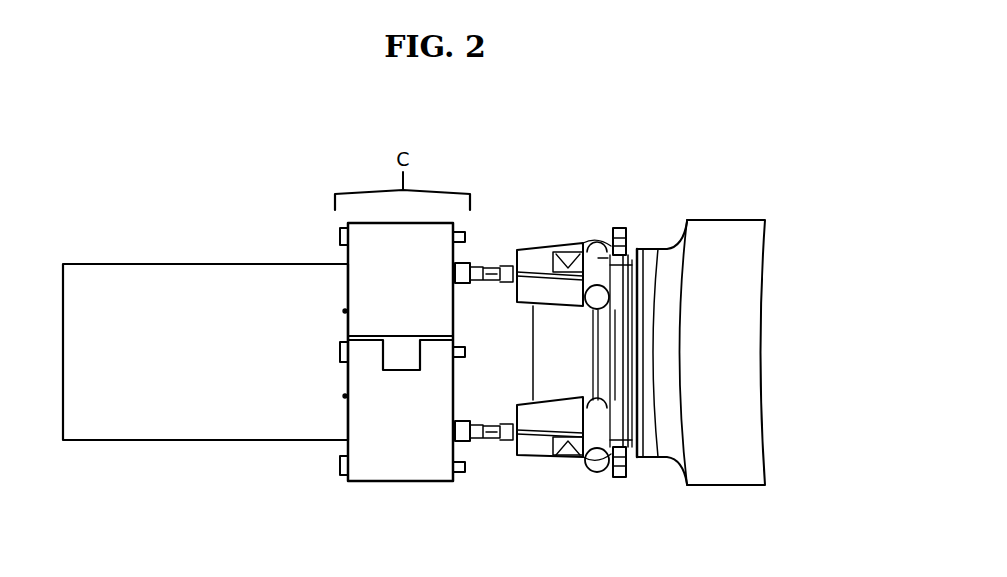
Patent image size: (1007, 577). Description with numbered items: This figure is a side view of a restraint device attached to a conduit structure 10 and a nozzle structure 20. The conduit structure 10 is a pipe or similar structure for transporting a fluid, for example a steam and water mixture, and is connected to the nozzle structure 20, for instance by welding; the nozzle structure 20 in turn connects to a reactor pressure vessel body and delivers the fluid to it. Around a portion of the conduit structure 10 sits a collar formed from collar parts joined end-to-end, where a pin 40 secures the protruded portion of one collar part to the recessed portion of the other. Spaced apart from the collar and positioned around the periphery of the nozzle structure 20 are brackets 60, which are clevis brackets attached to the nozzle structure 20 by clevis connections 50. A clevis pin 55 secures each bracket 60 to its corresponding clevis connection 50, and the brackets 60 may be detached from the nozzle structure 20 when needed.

The conduit structure 10 is at (165, 262).
The nozzle structure 20 is at (716, 219).
The pin 40 is at (338, 468).
The clevis connection 50 is at (617, 271).
The clevis pin 55 is at (603, 306).
The bracket 60 is at (552, 247).